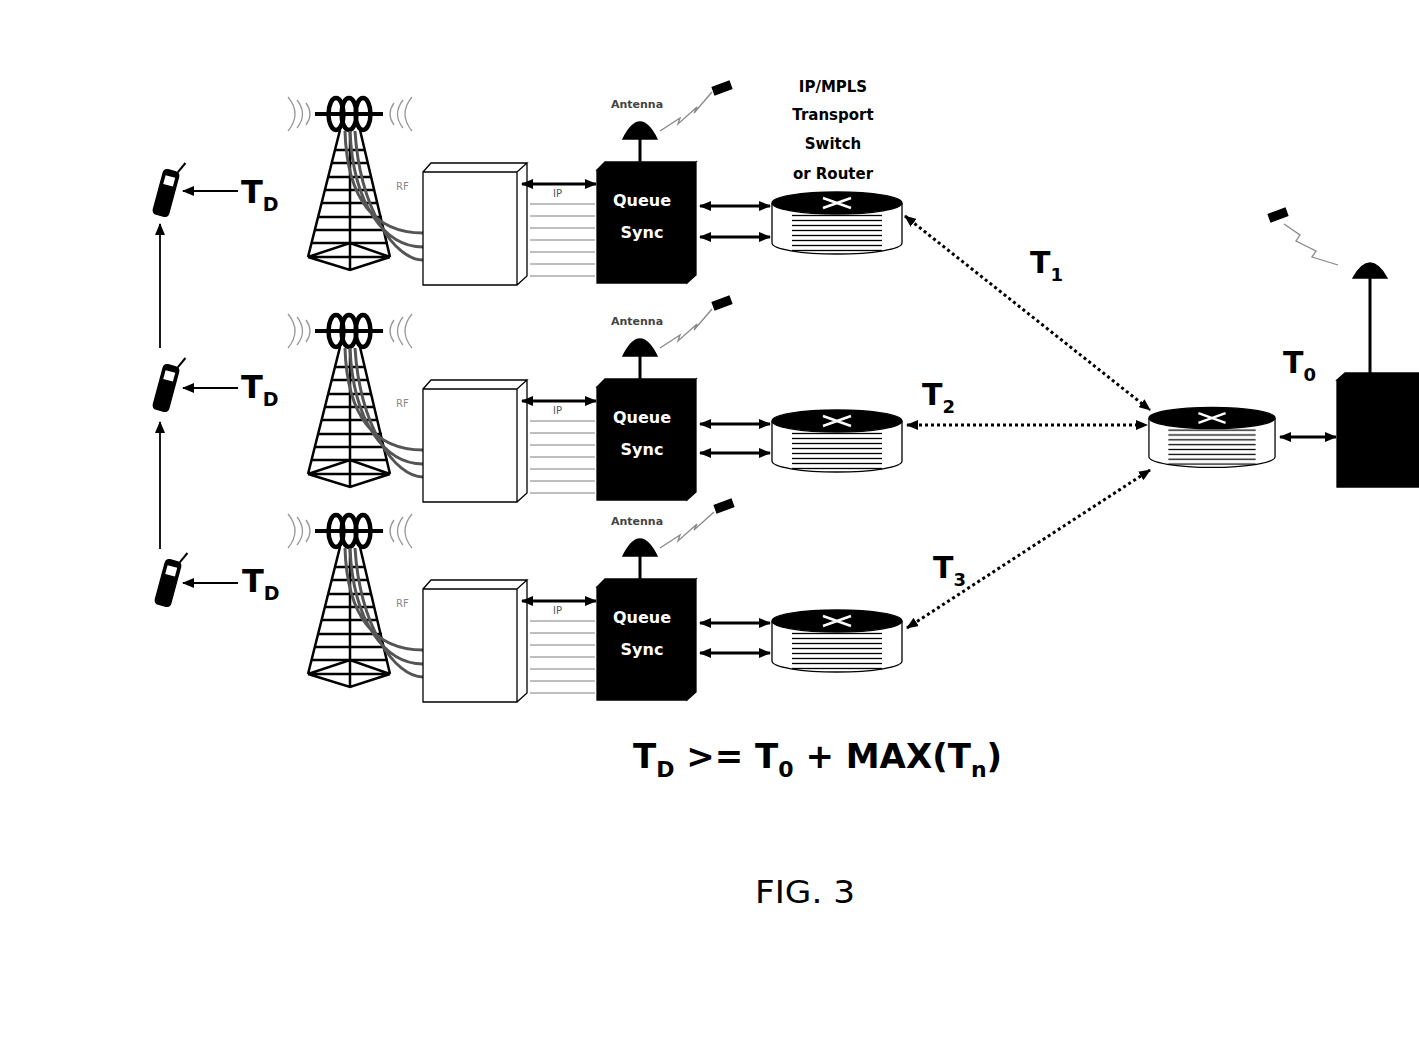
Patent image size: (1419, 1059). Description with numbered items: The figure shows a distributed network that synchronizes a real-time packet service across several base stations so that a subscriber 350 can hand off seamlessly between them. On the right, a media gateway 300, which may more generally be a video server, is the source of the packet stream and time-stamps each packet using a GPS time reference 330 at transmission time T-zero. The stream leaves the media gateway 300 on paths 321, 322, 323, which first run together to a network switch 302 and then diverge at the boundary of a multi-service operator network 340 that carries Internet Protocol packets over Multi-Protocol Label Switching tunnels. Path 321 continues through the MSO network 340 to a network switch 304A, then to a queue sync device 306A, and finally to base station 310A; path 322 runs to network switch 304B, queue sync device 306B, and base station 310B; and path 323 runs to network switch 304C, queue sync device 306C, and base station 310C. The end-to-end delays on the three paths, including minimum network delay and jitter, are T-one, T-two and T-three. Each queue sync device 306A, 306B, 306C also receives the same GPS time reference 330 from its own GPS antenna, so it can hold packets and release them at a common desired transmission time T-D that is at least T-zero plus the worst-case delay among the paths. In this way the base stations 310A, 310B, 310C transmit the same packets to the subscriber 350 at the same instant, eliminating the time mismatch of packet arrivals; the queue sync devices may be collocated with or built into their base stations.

The media gateway 300 is at (1379, 492).
The network switch 302 is at (1228, 391).
The network switch 304A is at (818, 262).
The network switch 304B is at (837, 482).
The network switch 304C is at (831, 679).
The queue sync device 306A is at (631, 292).
The queue sync device 306B is at (606, 509).
The queue sync device 306C is at (615, 712).
The base station 310A is at (350, 86).
The base station 310B is at (340, 311).
The base station 310C is at (328, 512).
The path 321 is at (1072, 308).
The path 322 is at (1082, 419).
The path 323 is at (1033, 542).
The GPS time reference 330 is at (719, 71).
The multi-service operator (MSO) network 340 is at (1154, 634).
The subscriber 350 is at (139, 372).